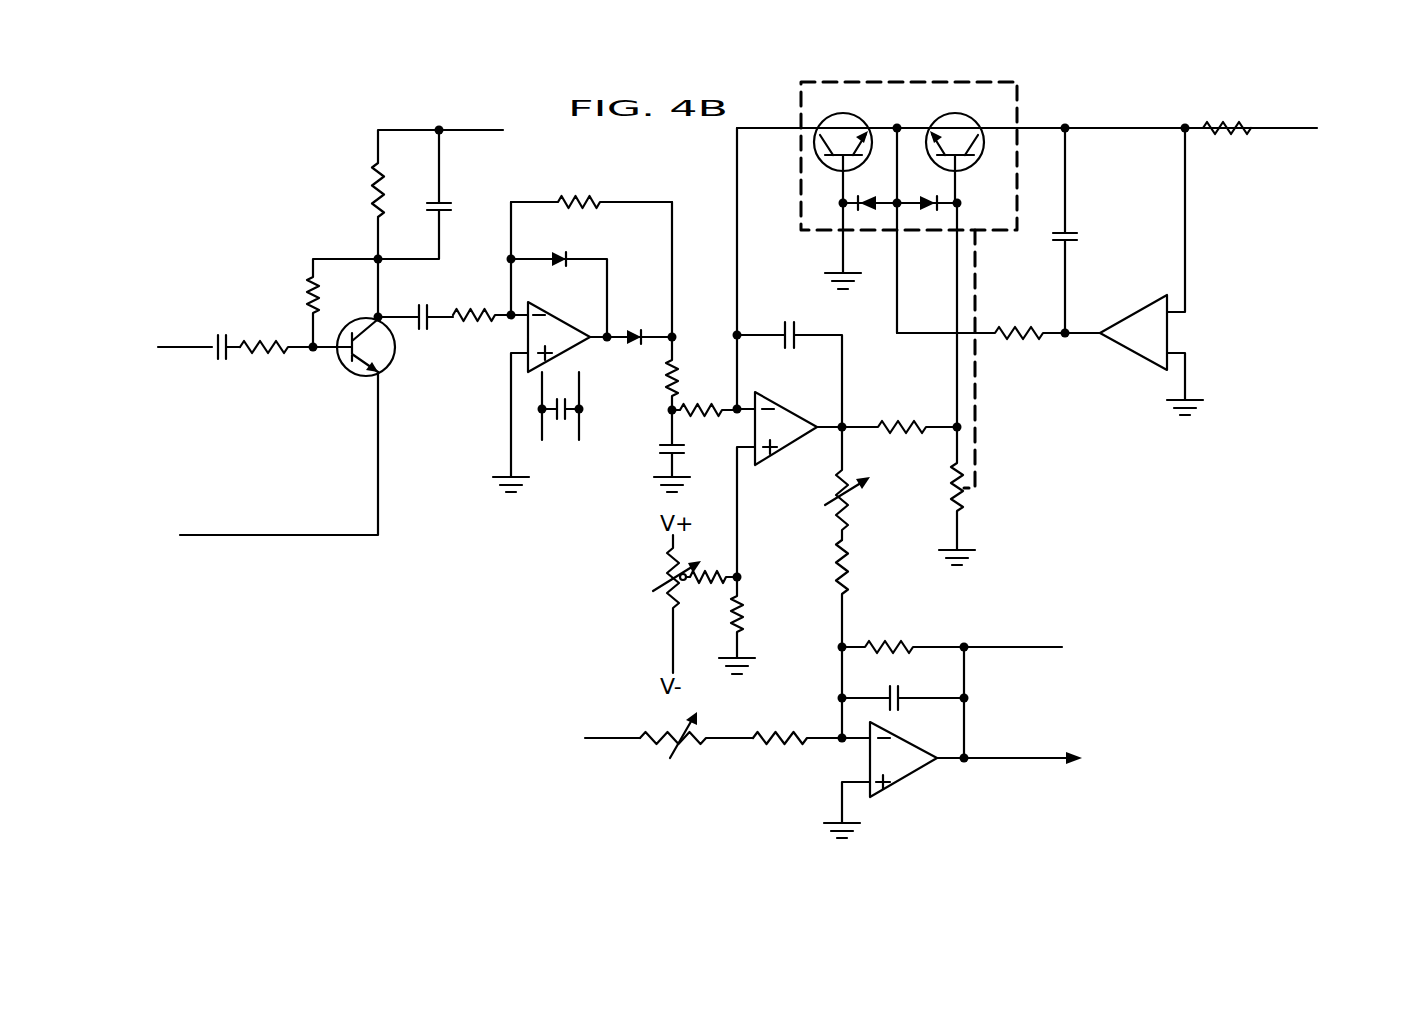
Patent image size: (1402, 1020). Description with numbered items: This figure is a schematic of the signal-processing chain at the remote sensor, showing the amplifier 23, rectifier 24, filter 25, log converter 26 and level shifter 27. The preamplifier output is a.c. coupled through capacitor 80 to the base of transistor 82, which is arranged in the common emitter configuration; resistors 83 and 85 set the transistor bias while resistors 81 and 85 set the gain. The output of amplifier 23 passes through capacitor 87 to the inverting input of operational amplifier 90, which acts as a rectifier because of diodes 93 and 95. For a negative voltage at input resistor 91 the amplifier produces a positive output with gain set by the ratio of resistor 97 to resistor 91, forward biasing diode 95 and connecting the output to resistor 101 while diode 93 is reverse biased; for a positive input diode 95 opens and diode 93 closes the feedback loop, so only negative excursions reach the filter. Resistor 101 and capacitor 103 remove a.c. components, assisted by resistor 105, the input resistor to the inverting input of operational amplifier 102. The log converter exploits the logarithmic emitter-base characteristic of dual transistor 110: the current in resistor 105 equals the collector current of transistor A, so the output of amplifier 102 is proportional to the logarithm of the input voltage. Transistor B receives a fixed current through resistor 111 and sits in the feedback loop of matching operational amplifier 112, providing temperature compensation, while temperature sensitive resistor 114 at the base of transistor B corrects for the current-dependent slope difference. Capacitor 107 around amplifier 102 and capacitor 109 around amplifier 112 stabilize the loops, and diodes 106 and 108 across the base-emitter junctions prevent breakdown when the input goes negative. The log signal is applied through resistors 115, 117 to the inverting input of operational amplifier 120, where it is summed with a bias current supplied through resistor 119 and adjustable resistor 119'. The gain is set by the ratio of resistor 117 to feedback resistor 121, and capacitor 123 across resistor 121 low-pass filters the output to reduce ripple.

The amplifier 23 is at (420, 425).
The rectifier 24 is at (643, 190).
The filter 25 is at (648, 490).
The log converter 26 is at (752, 302).
The level shifter 27 is at (800, 768).
The capacitor 80 is at (218, 332).
The resistor 81 is at (260, 352).
The transistor 82 is at (400, 360).
The resistor 83 is at (372, 190).
The resistor 85 is at (308, 295).
The capacitor 87 is at (421, 304).
The operational amplifier 90 is at (548, 314).
The input resistor 91 is at (478, 307).
The diode 93 is at (566, 253).
The diode 95 is at (636, 330).
The resistor 97 is at (570, 197).
The resistor 101 is at (662, 383).
The operational amplifier 102 is at (770, 404).
The capacitor 103 is at (661, 446).
The resistor 105 is at (716, 402).
The diode 106 is at (866, 212).
The capacitor 107 is at (787, 330).
The diode 108 is at (921, 212).
The capacitor 109 is at (1072, 232).
The dual transistor 110 is at (1020, 104).
The resistor 111 is at (1225, 122).
The operational amplifier 112 is at (1147, 308).
The temperature sensitive resistor 114 is at (968, 498).
The resistor 115 is at (852, 517).
The resistor 117 is at (852, 576).
The resistor 119 is at (800, 717).
The adjustable resistor 119' is at (668, 755).
The operational amplifier 120 is at (910, 776).
The feedback resistor 121 is at (894, 640).
The capacitor 123 is at (896, 697).